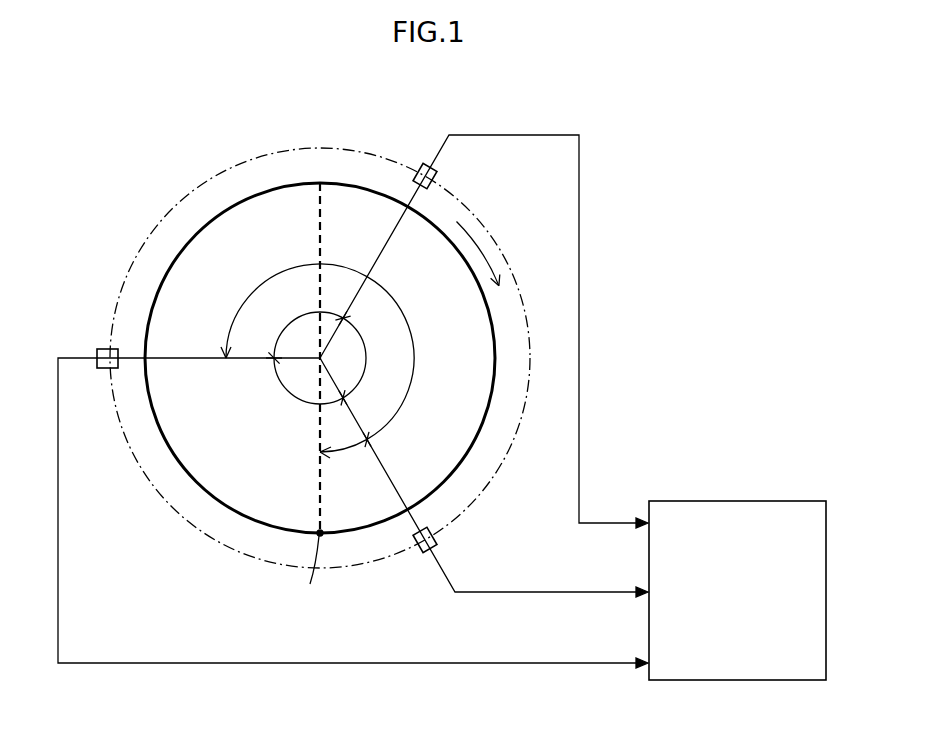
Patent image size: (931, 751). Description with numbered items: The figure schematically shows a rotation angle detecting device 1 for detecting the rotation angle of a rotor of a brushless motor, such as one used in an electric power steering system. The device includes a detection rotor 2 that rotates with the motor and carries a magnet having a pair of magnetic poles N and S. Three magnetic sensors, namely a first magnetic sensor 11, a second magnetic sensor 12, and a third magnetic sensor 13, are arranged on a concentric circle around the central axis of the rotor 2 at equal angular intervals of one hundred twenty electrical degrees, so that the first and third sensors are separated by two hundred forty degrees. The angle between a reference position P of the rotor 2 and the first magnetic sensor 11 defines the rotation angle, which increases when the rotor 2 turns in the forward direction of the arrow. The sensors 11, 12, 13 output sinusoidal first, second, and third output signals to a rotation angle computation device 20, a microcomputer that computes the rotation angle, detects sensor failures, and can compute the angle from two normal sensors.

The rotation angle detecting device 1 is at (549, 119).
The detection rotor 2 is at (200, 233).
The first magnetic sensor 11 is at (437, 546).
The second magnetic sensor 12 is at (436, 181).
The third magnetic sensor 13 is at (106, 350).
The rotation angle computation device 20 is at (694, 500).